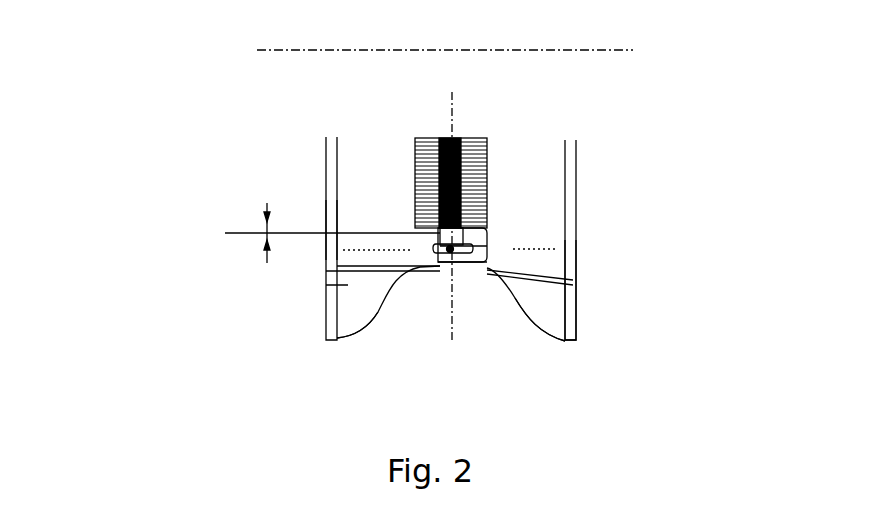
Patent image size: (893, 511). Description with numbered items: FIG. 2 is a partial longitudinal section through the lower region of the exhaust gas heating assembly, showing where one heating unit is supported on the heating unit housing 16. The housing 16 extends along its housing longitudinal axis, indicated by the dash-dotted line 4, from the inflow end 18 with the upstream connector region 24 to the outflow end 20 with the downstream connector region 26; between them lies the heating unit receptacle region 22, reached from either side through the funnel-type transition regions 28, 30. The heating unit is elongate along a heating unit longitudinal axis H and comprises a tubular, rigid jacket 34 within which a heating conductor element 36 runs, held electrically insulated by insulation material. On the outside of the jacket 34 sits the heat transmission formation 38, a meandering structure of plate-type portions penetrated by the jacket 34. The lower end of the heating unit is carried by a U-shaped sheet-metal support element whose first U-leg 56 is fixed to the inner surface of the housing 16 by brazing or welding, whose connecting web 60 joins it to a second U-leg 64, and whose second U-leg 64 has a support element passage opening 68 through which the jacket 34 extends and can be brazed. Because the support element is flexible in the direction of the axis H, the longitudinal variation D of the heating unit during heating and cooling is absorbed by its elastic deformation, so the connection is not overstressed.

The reference plane / vehicle axis 4 is at (575, 51).
The heating unit longitudinal axis H is at (451, 93).
The heating unit housing 16 is at (584, 137).
The inflow end 18 is at (740, 257).
The outflow end 20 is at (127, 221).
The heating unit receptacle region 22 is at (431, 302).
The upstream connector region 24 is at (604, 343).
The downstream connector region 26 is at (316, 340).
The transition region 28 is at (527, 318).
The transition region 30 is at (373, 330).
The jacket 34 is at (487, 226).
The heating conductor element 36 is at (455, 262).
The heat transmission formation 38 is at (417, 137).
The first U-leg 56 is at (487, 255).
The connecting web 60 is at (487, 246).
The second U-leg 64 is at (436, 236).
The support element passage opening 68 is at (436, 240).
The longitudinal variation D is at (267, 203).